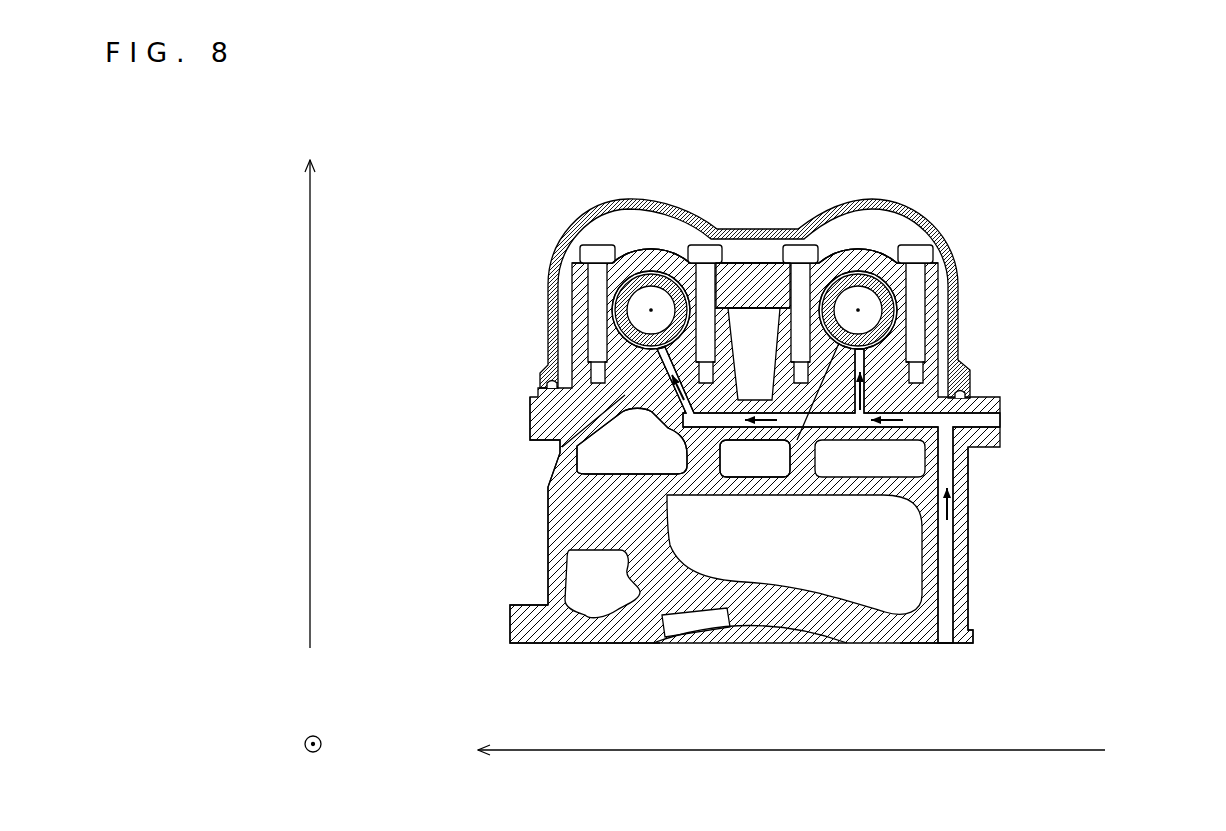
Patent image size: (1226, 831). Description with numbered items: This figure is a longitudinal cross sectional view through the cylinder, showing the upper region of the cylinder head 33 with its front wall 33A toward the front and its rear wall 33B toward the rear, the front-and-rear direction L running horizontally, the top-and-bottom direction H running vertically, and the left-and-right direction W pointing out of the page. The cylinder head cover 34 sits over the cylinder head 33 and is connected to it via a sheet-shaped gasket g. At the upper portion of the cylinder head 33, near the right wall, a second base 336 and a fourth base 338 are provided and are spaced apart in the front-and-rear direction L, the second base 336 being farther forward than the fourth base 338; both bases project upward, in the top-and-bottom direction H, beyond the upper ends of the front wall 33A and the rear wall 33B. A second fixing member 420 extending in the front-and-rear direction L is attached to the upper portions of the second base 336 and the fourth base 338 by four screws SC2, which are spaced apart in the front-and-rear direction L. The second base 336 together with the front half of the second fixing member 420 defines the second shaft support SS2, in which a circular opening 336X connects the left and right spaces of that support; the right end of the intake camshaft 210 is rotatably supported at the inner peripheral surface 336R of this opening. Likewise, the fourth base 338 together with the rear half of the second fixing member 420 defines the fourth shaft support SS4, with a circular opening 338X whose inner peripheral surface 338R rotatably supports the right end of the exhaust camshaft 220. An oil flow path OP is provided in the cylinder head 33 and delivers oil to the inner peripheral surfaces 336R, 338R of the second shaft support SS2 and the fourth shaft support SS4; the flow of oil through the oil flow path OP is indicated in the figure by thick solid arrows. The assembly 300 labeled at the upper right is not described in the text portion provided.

The cylinder head 33 is at (640, 618).
The front wall 33A is at (548, 568).
The rear wall 33B is at (970, 583).
The cylinder head cover 34 is at (548, 262).
The balancer unit 300 is at (923, 100).
The screws SC2 is at (592, 252).
The second shaft support SS2 is at (647, 240).
The fourth shaft support SS4 is at (860, 240).
The second base 336 is at (617, 362).
The fourth base 338 is at (883, 355).
The inner peripheral surface 336R is at (613, 324).
The inner peripheral surface 338R is at (890, 323).
The circular opening 336X is at (650, 300).
The circular opening 338X is at (860, 300).
The second fixing member 420 is at (743, 272).
The intake camshaft 210 is at (563, 452).
The exhaust camshaft 220 is at (790, 443).
The oil flow path OP is at (923, 423).
The gasket g is at (548, 383).
The top-and-bottom direction H is at (311, 260).
The front-and-rear direction L is at (910, 750).
The width direction W is at (303, 745).